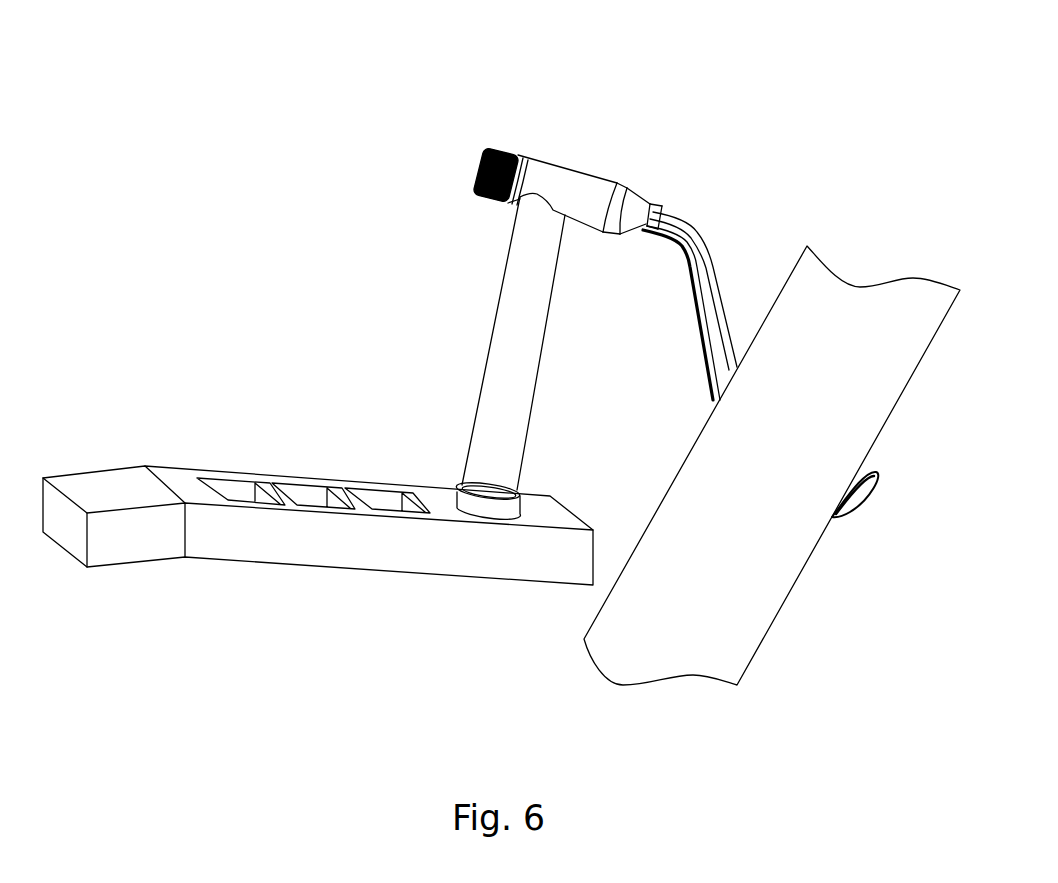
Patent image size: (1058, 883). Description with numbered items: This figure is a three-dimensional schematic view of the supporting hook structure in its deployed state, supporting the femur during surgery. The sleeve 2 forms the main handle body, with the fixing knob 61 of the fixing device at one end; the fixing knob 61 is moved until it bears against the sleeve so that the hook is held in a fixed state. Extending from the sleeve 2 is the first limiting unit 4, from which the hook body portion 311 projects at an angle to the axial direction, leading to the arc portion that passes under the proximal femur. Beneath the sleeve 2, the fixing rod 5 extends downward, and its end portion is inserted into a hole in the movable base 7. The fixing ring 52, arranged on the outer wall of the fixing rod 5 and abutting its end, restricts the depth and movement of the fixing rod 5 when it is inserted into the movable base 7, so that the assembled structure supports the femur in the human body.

The sleeve 2 is at (555, 175).
The first limiting unit 4 is at (612, 183).
The fixing rod 5 is at (512, 345).
The movable base 7 is at (124, 490).
The fixing ring 52 is at (458, 490).
The fixing knob 61 is at (487, 150).
The hook body portion 311 is at (705, 275).